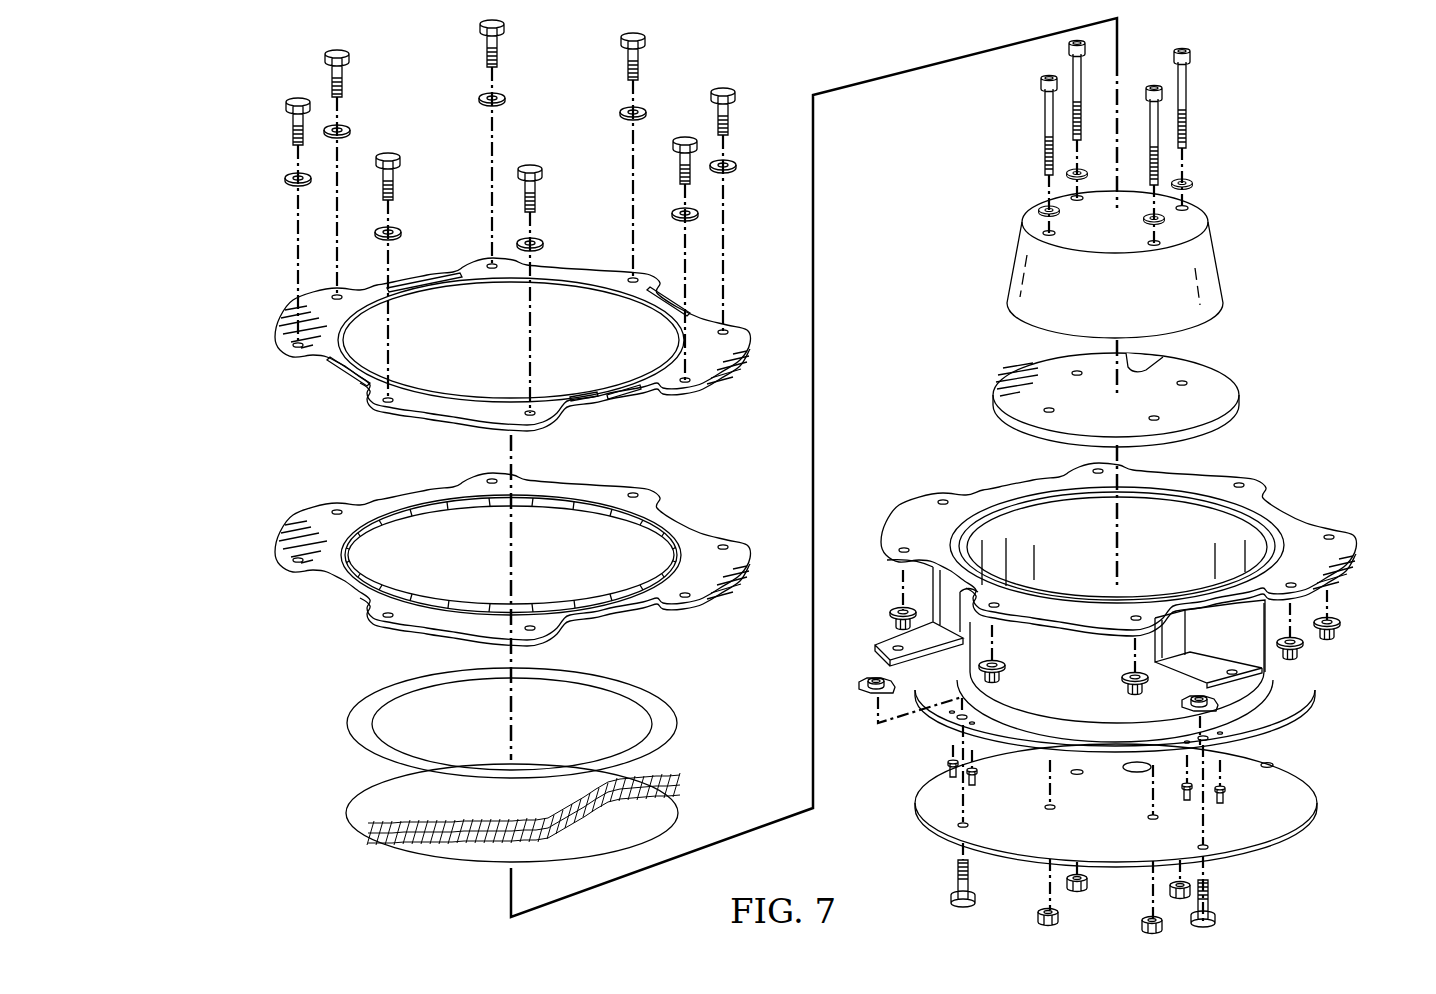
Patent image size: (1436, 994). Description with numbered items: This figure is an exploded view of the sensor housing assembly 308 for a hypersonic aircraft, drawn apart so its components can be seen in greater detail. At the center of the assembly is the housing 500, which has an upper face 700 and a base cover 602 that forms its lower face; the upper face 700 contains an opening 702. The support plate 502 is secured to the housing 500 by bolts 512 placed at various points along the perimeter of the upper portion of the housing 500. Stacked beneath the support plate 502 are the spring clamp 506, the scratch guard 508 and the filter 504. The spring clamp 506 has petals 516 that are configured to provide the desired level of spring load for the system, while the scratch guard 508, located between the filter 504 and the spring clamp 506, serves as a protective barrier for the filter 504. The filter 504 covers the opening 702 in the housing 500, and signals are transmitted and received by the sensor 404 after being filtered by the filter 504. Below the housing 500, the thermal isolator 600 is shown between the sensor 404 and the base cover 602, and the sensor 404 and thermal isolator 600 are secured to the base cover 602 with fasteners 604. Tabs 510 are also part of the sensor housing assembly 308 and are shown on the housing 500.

The sensor housing assembly 308 is at (160, 98).
The bolts 512 is at (287, 102).
The support plate 502 is at (272, 338).
The petals 516 is at (422, 512).
The spring clamp 506 is at (272, 552).
The scratch guard 508 is at (349, 726).
The filter 504 is at (349, 808).
The fasteners 604 is at (1042, 112).
The sensor 404 is at (1222, 262).
The thermal isolator 600 is at (1240, 402).
The upper face 700 is at (910, 518).
The opening 702 is at (1015, 540).
The tabs 510 is at (880, 636).
The housing 500 is at (1313, 692).
The base cover 602 is at (1318, 800).